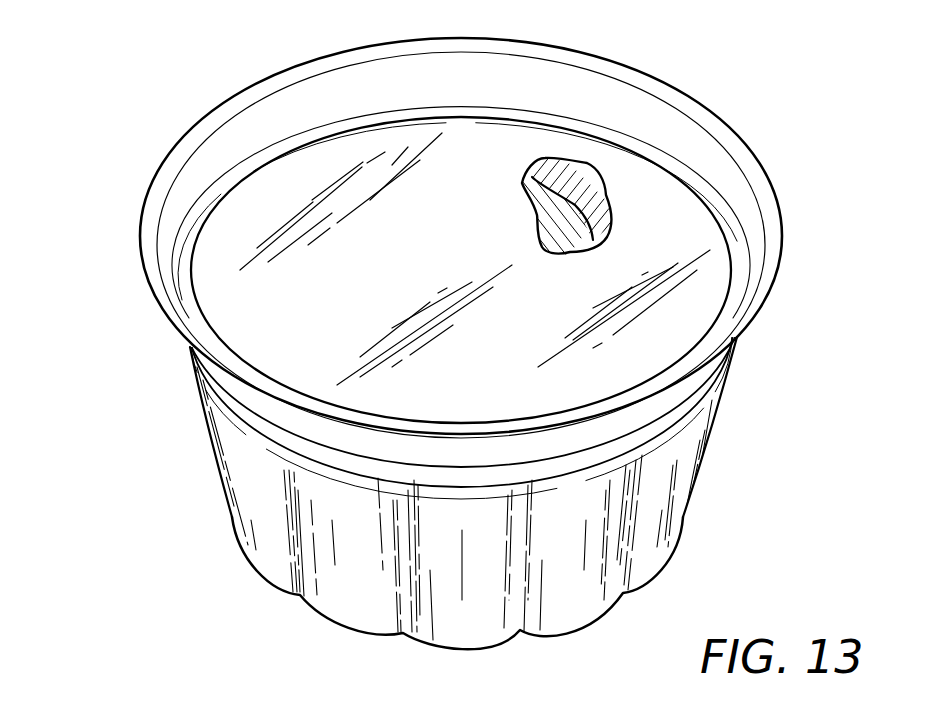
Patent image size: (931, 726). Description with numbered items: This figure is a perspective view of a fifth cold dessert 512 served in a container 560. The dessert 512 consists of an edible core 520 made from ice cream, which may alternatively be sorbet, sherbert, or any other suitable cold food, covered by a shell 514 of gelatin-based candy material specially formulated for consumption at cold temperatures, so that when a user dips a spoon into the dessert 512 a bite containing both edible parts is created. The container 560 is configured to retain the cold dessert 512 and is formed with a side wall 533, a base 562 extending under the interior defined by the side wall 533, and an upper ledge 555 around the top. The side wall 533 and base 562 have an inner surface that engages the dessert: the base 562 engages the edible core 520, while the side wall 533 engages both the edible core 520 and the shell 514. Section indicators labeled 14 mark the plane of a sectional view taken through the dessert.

The fifth cold dessert 512 is at (138, 127).
The shell 514 is at (603, 178).
The edible core 520 is at (607, 240).
The upper ledge 555 is at (147, 277).
The container 560 is at (740, 442).
The side wall 533 is at (212, 478).
The base 562 is at (553, 636).
The section line for FIG. 14 is at (487, 227).